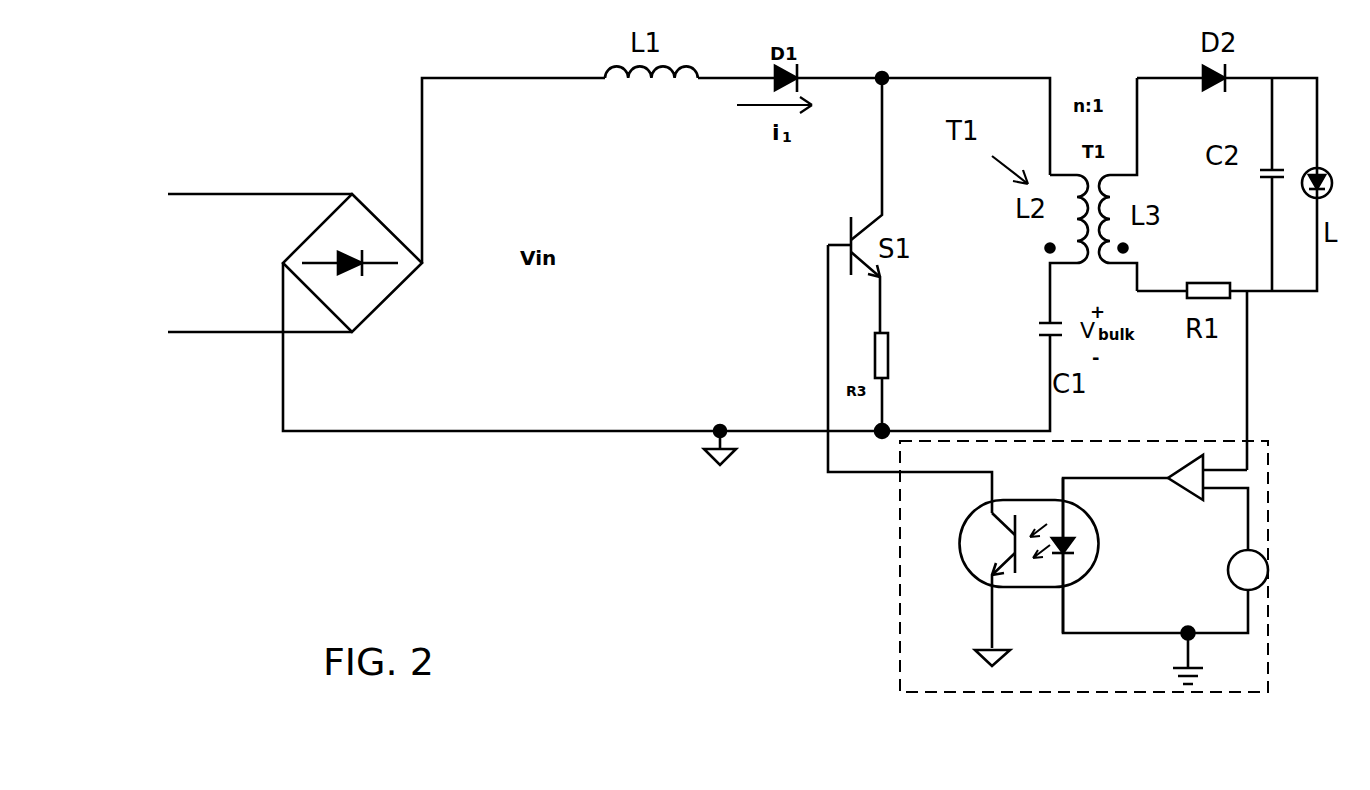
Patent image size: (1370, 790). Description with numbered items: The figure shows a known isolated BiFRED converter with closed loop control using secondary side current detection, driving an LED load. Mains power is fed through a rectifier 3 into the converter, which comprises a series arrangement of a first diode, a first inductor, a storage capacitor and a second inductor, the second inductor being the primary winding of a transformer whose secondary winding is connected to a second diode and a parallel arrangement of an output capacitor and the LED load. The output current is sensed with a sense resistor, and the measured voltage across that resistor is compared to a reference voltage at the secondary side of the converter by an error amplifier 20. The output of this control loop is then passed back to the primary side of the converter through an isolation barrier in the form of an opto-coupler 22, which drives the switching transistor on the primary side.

The rectifier 3 is at (322, 171).
The error amplifier 20 is at (1208, 480).
The opto-coupler 22 is at (960, 548).